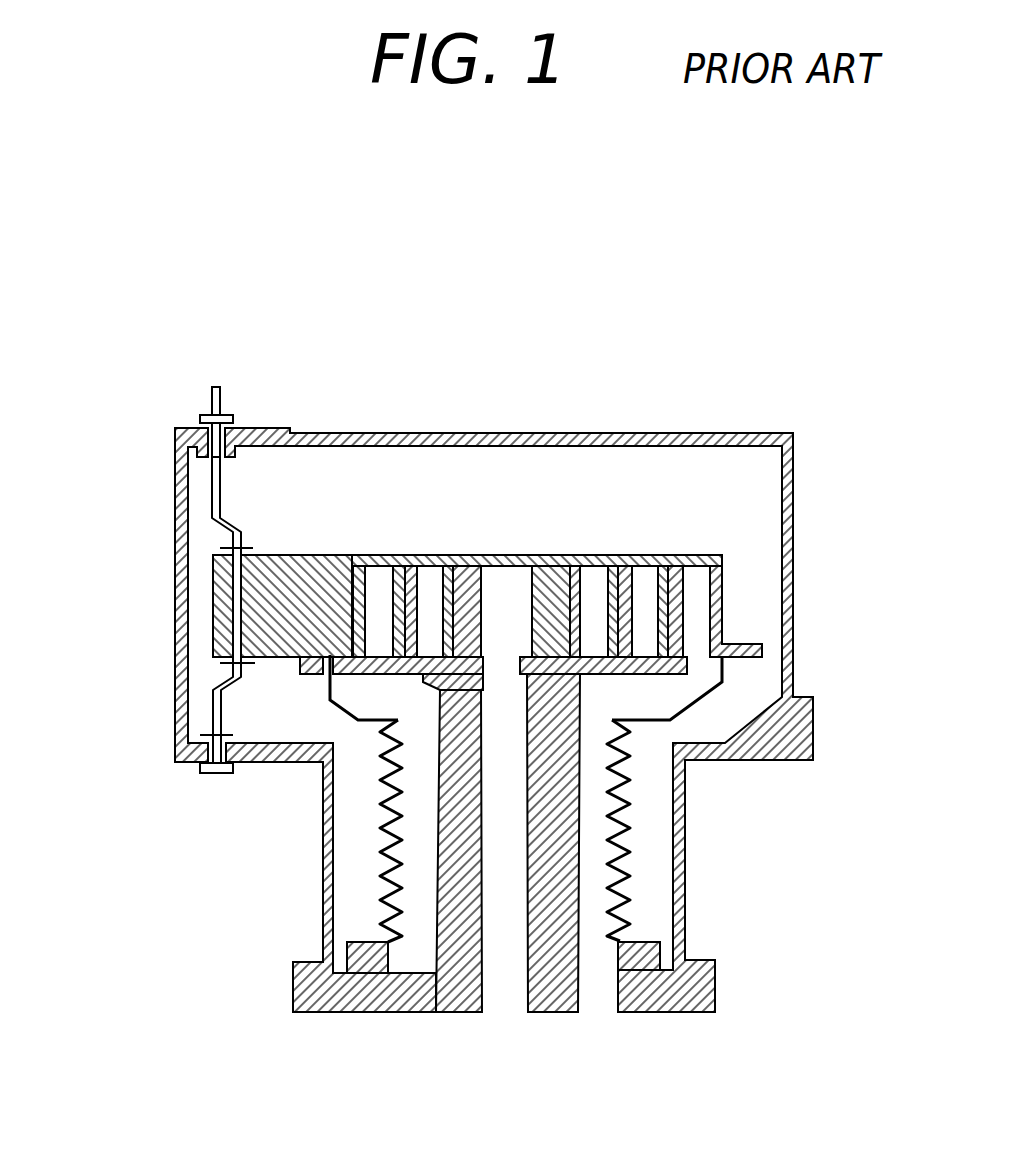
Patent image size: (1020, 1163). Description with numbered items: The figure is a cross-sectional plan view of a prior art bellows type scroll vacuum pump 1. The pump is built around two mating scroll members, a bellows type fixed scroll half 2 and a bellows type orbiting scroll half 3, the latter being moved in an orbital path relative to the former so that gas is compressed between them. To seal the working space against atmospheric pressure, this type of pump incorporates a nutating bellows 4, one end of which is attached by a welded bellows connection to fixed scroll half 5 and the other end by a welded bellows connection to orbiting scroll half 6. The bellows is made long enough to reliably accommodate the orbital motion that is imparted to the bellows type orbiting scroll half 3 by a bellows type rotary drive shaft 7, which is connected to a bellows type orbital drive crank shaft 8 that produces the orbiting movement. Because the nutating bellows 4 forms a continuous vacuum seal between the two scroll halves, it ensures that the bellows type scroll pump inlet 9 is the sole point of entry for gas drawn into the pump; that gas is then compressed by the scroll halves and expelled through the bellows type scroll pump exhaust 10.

The bellows type scroll vacuum pump 1 is at (702, 432).
The bellows type fixed scroll half 2 is at (460, 983).
The bellows type orbiting scroll half 3 is at (330, 570).
The nutating bellows 4 is at (627, 857).
The welded bellows connection to fixed scroll half 5 is at (623, 938).
The welded bellows connection to orbiting scroll half 6 is at (723, 660).
The bellows type rotary drive shaft 7 is at (220, 385).
The bellows type orbital drive crank shaft 8 is at (215, 698).
The bellows type scroll pump inlet 9 is at (600, 1002).
The bellows type scroll pump exhaust 10 is at (503, 997).